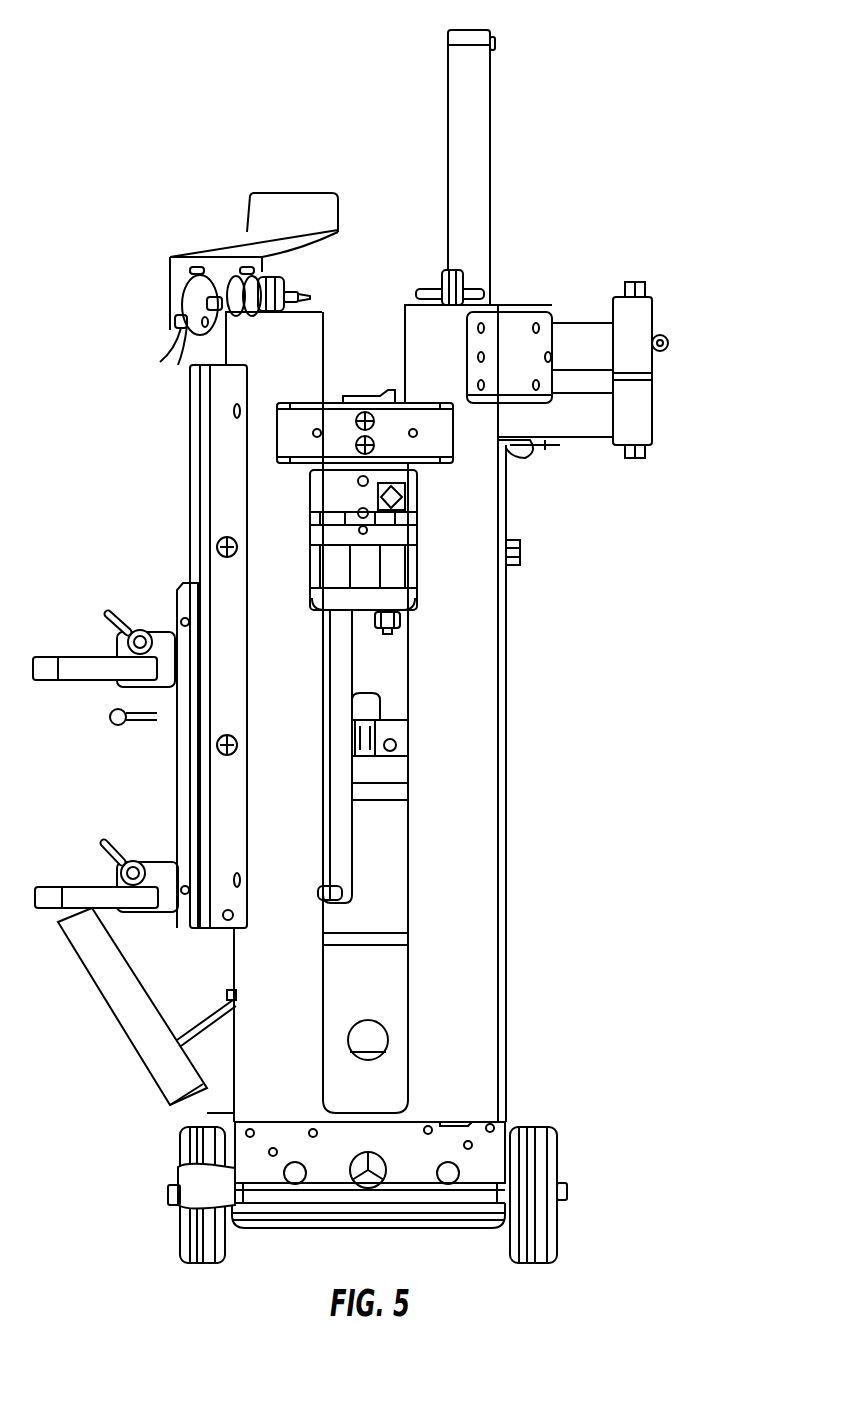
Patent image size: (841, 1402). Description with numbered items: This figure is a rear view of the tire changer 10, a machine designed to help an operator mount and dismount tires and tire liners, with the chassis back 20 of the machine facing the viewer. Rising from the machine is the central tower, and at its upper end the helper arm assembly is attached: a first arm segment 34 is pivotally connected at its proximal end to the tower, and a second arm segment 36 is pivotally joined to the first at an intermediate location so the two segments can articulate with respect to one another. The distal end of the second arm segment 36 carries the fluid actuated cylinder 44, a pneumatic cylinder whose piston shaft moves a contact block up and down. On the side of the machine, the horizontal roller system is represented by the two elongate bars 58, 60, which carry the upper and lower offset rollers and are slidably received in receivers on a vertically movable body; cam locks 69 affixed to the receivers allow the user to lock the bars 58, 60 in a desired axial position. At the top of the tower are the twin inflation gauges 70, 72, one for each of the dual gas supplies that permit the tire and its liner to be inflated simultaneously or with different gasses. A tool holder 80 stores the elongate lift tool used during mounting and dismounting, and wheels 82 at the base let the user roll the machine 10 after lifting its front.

The tire changer 10 is at (675, 98).
The back 20 is at (462, 767).
The first arm segment 34 is at (579, 323).
The second arm segment 36 is at (601, 445).
The fluid actuated cylinder 44 is at (447, 86).
The elongate bar 58 is at (50, 682).
The elongate bar 60 is at (37, 892).
The cam lock 69 is at (111, 612).
The inflation gauge 70 is at (263, 272).
The inflation gauge 72 is at (186, 331).
The tool holder 80 is at (119, 1023).
The wheel 82 is at (207, 1263).